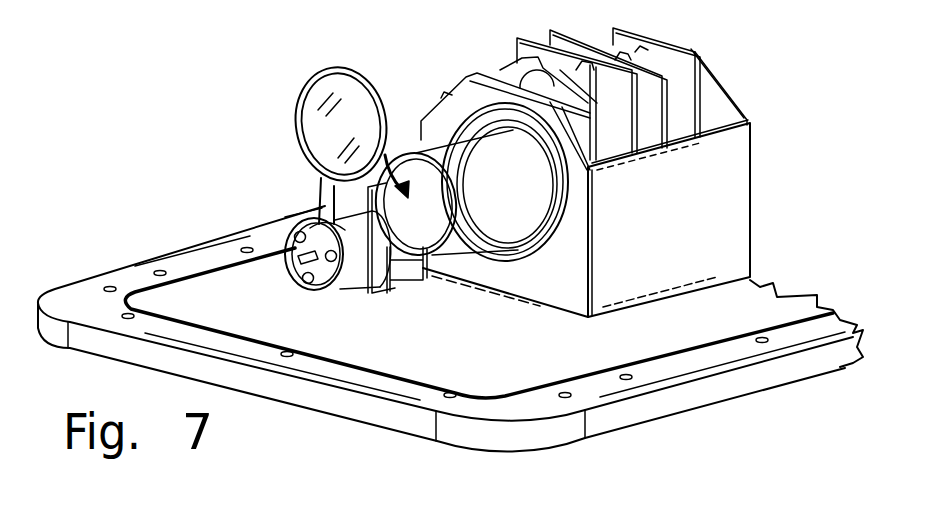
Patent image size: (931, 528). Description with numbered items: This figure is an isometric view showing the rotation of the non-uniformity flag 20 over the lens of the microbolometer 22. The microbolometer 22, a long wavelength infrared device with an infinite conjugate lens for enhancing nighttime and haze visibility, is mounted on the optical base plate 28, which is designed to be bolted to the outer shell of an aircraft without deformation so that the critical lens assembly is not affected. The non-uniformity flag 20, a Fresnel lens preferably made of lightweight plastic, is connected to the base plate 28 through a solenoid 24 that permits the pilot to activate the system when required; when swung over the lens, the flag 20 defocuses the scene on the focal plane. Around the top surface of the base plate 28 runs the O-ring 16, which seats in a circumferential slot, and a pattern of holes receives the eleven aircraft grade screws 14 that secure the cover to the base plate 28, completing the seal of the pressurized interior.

The aircraft grade screws 14 is at (768, 340).
The O-ring 16 is at (673, 353).
The non-uniformity flag 20 is at (352, 95).
The microbolometer 22 is at (729, 192).
The solenoid 24 is at (322, 286).
The base plate 28 is at (368, 408).